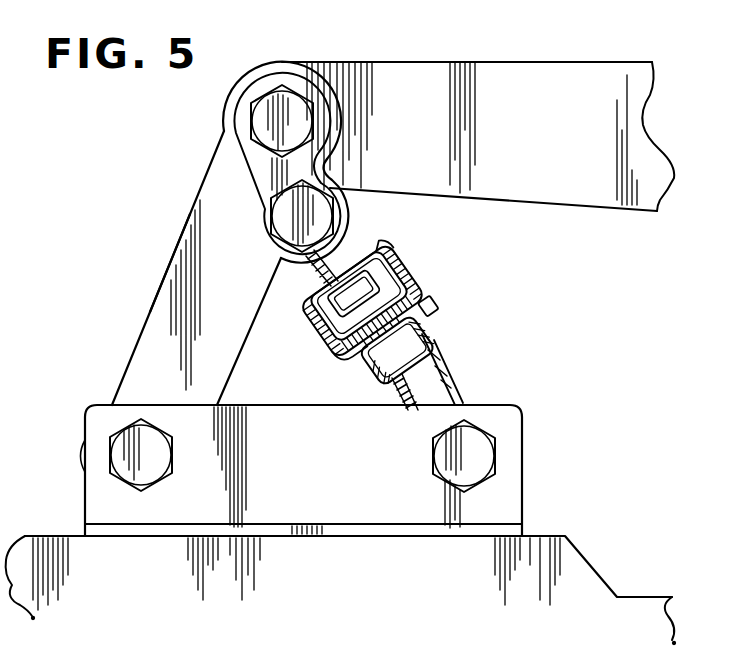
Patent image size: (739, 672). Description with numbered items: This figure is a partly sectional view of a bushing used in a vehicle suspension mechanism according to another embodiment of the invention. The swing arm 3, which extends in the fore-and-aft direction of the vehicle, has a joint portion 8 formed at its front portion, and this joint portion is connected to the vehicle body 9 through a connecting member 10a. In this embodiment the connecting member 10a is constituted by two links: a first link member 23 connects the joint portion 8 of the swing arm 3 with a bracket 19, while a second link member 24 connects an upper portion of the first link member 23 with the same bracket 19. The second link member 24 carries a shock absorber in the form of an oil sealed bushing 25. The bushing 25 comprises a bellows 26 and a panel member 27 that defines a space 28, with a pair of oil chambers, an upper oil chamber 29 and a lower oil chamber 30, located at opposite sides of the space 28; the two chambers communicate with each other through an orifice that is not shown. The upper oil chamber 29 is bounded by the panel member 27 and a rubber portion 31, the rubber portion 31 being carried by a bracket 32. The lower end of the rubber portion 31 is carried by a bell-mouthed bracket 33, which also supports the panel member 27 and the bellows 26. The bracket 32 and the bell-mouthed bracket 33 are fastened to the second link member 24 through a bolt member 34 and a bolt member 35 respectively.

The swing arm 3 is at (549, 62).
The joint portion 8 is at (328, 66).
The vehicle body 9 is at (592, 582).
The connecting member 10a is at (190, 196).
The bracket 19 is at (518, 450).
The first link member 23 is at (146, 336).
The second link member 24 is at (450, 396).
The oil sealed bushing 25 is at (428, 276).
The bellows 26 is at (425, 313).
The panel member 27 is at (336, 348).
The space 28 is at (368, 378).
The upper oil chamber 29 is at (400, 283).
The lower oil chamber 30 is at (440, 355).
The rubber portion 31 is at (316, 326).
The bracket 32 is at (306, 308).
The bell-mouthed bracket 33 is at (448, 385).
The bolt member 34 is at (347, 283).
The bolt member 35 is at (387, 392).